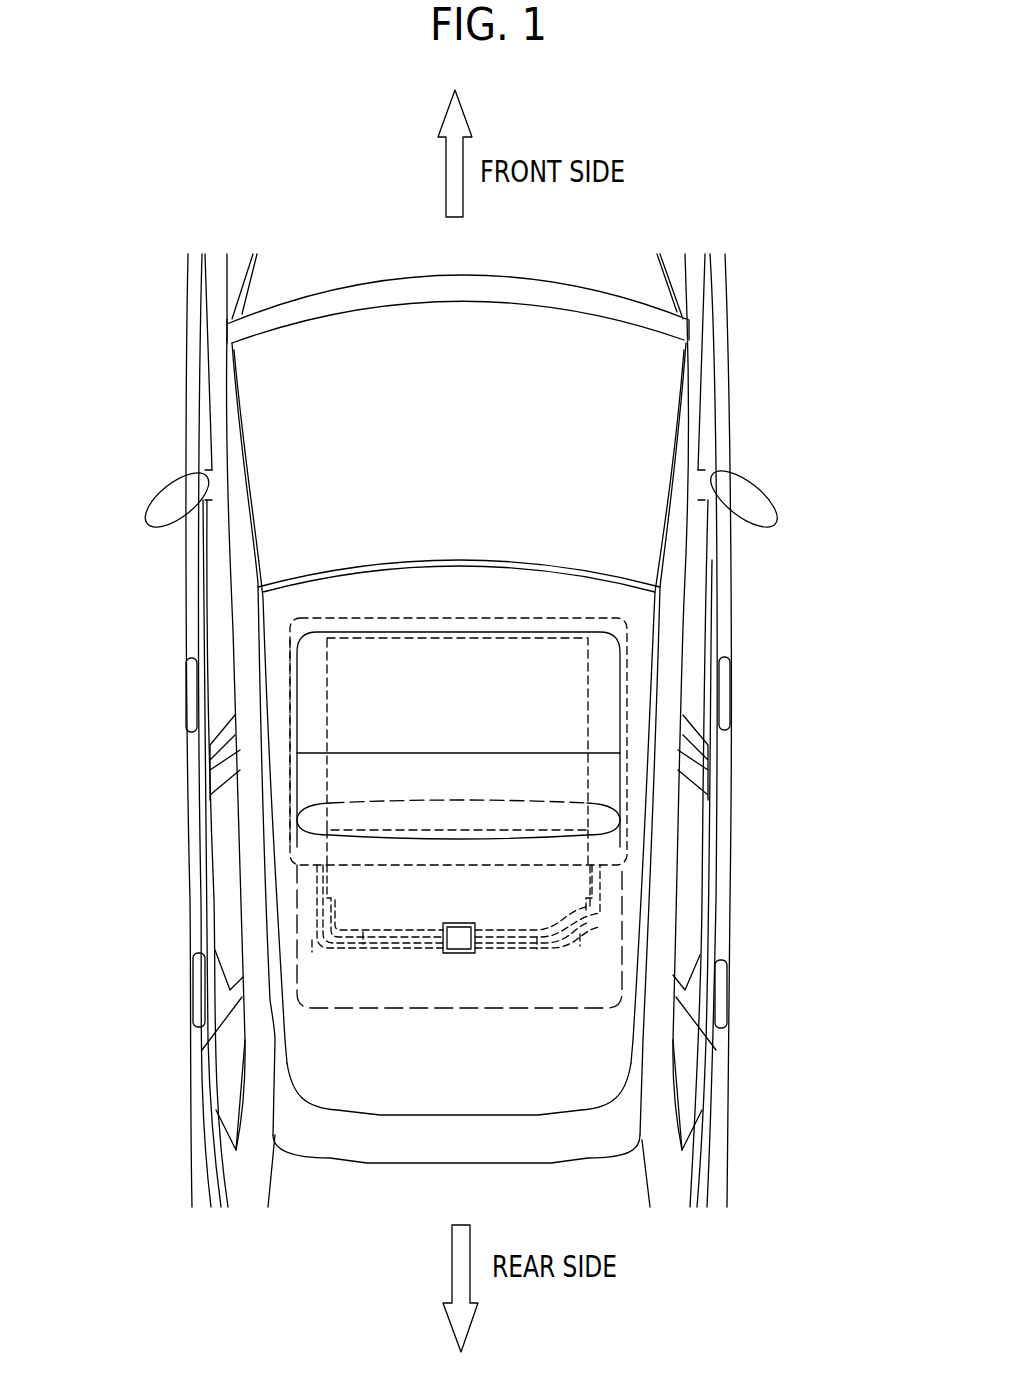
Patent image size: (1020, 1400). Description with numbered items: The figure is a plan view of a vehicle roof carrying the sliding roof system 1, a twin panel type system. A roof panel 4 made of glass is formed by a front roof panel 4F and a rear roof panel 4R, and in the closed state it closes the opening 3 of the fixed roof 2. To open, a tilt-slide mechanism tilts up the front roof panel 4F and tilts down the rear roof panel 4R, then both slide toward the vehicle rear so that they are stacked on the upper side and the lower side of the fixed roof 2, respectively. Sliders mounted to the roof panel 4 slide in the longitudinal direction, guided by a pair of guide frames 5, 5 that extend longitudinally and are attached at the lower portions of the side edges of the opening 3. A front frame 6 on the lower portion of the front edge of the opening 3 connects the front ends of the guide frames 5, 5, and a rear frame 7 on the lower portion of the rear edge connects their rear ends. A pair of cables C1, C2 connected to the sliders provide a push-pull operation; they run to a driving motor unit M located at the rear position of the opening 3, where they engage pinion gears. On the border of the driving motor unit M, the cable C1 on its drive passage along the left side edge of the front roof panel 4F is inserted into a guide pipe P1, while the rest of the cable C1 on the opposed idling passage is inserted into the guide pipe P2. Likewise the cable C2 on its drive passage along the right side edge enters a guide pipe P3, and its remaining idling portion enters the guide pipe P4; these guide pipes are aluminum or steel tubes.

The sliding roof system 1 is at (635, 610).
The fixed roof 2 is at (283, 687).
The opening 3 is at (468, 733).
The roof panel 4 is at (591, 738).
The front roof panel 4F is at (605, 725).
The rear roof panel 4R is at (607, 775).
The guide frame 5 is at (287, 748).
The front frame 6 is at (512, 617).
The rear frame 7 is at (517, 850).
The driving motor unit M is at (470, 955).
The cable C1 is at (360, 940).
The cable C2 is at (600, 958).
The guide pipe P1 is at (312, 946).
The guide pipe P2 is at (537, 943).
The guide pipe P3 is at (580, 940).
The guide pipe P4 is at (363, 938).